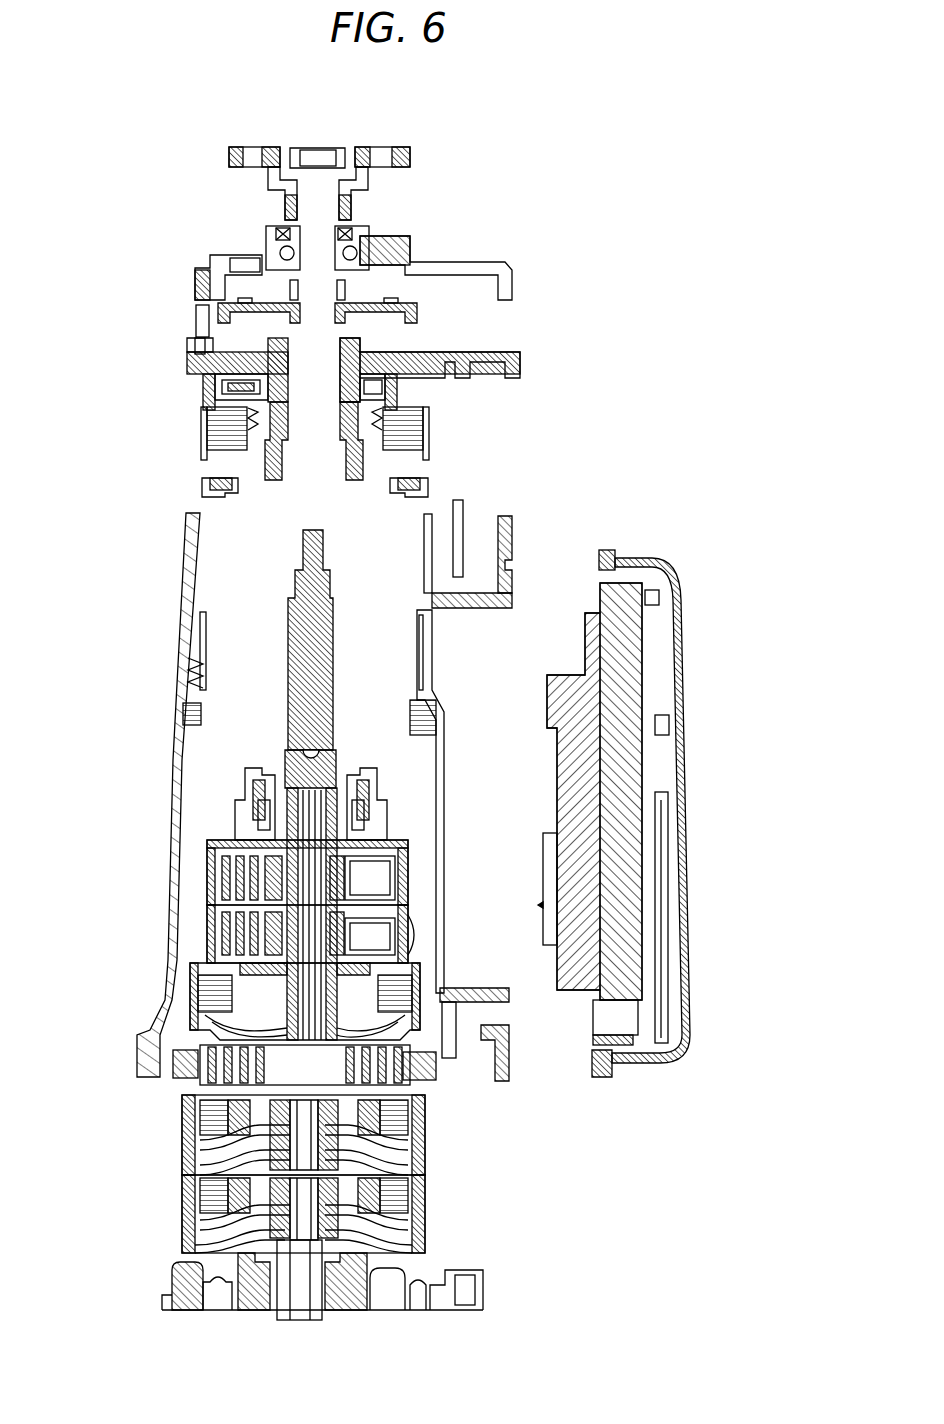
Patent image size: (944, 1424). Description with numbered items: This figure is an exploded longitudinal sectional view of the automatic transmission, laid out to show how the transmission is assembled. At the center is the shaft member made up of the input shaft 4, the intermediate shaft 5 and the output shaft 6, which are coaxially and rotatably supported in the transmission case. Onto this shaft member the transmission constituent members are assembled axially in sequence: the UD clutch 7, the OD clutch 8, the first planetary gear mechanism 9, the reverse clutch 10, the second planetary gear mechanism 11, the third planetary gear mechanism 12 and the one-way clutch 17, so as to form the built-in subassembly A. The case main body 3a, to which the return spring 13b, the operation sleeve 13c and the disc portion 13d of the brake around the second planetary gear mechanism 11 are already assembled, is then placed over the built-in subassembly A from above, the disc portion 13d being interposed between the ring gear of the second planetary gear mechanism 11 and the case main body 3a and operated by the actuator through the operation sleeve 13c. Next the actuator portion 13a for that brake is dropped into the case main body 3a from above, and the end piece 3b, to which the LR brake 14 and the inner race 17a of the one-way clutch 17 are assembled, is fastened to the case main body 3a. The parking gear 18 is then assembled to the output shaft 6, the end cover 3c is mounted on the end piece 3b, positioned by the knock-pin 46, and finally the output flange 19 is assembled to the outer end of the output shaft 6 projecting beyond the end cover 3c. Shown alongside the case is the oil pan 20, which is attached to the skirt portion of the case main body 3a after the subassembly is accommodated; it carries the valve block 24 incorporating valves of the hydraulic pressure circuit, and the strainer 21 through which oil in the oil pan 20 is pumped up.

The output flange 19 is at (410, 160).
The end cover 3c is at (515, 292).
The parking gear 18 is at (417, 315).
The knock-pin 46 is at (195, 318).
The end piece 3b is at (195, 362).
The LR brake 14 is at (200, 428).
The inner race 17a is at (272, 485).
The actuator portion 13a is at (200, 488).
The case main body 3a is at (175, 845).
The operation sleeve 13c is at (207, 655).
The return spring 13b is at (190, 680).
The disc portion 13d is at (202, 712).
The output shaft 6 is at (338, 650).
The one-way clutch 17 is at (362, 795).
The third planetary gear mechanism 12 is at (418, 880).
The second planetary gear mechanism 11 is at (420, 945).
The 35R clutch 10 is at (425, 1000).
The intermediate shaft 5 is at (215, 1062).
The first planetary gear mechanism 9 is at (440, 1062).
The OD clutch 8 is at (430, 1115).
The UD clutch 7 is at (430, 1185).
The built-in subassembly A is at (150, 1168).
The input shaft 4 is at (215, 1292).
The oil pan 20 is at (688, 790).
The valve block 24 is at (642, 700).
The strainer 21 is at (668, 950).